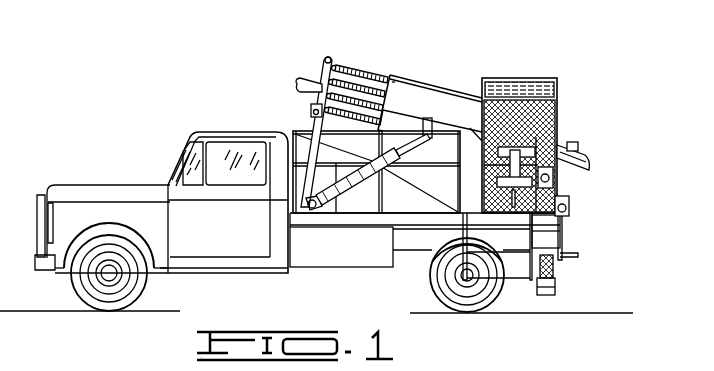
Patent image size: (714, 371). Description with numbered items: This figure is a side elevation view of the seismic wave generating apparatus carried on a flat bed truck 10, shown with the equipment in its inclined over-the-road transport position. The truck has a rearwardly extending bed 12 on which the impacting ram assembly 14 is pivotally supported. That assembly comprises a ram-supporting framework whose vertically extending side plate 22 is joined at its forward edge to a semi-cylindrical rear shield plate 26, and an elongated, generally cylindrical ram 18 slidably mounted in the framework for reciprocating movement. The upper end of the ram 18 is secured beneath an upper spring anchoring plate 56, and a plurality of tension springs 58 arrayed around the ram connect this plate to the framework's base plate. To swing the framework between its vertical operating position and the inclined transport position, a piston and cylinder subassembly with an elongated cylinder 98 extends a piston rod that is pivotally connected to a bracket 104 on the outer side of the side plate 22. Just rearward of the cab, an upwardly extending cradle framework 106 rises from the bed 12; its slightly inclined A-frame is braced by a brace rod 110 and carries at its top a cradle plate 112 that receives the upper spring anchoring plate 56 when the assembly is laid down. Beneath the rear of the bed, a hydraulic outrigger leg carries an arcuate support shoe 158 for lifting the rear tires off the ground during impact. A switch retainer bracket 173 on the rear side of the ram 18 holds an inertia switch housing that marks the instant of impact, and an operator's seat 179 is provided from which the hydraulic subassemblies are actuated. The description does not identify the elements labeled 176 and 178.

The flat bed truck 10 is at (174, 140).
The bed 12 is at (417, 252).
The impacting ram assembly 14 is at (408, 74).
The ram 18 is at (588, 156).
The side plate 22 is at (423, 145).
The rear shield plate 26 is at (402, 95).
The upper spring anchoring plate 56 is at (326, 58).
The tension springs 58 is at (372, 66).
The cylinder 98 is at (360, 188).
The bracket 104 is at (430, 120).
The cradle framework 106 is at (296, 118).
The brace rod 110 is at (398, 176).
The cradle plate 112 is at (308, 106).
The arcuate support shoe 158 is at (556, 287).
The switch retainer bracket 173 is at (575, 140).
The cage 176 is at (492, 78).
The ladder 178 is at (520, 282).
The operator's seat 179 is at (522, 148).